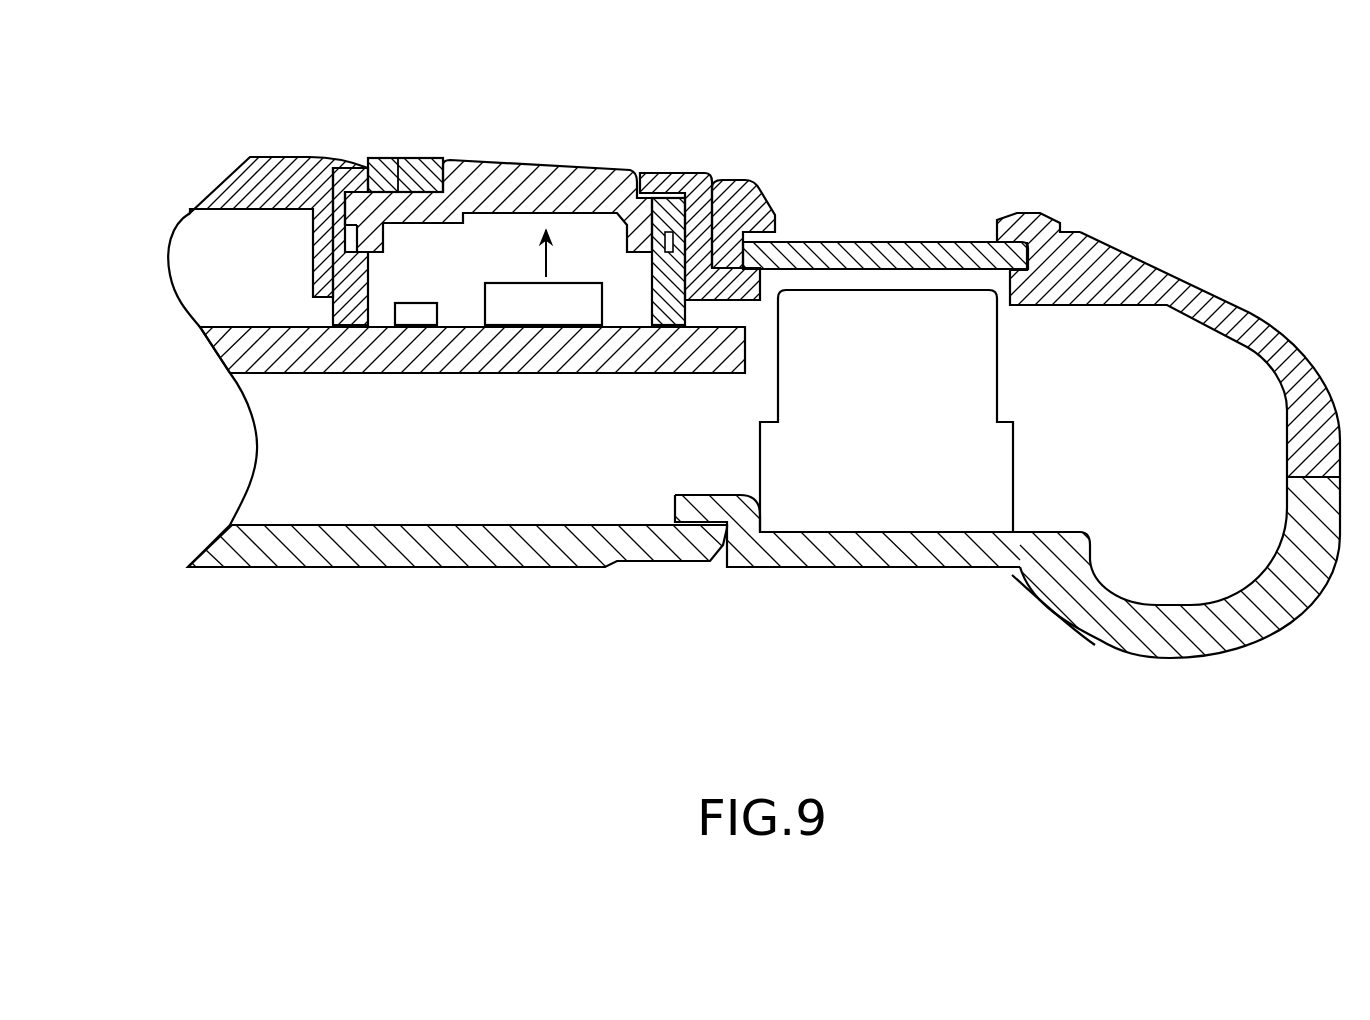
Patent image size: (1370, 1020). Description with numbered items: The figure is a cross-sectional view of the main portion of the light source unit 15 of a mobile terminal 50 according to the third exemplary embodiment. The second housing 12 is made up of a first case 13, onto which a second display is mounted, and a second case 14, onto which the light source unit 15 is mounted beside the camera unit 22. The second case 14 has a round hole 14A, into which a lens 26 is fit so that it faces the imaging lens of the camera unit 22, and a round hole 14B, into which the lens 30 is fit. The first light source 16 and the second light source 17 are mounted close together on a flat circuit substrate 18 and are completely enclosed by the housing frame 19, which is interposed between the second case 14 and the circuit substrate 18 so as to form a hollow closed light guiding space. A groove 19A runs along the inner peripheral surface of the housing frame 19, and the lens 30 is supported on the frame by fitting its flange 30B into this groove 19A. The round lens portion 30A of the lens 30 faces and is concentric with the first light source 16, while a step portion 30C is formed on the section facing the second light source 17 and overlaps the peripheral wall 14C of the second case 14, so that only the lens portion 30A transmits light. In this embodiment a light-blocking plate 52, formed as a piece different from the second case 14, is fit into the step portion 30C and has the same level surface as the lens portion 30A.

The second housing 12 is at (970, 648).
The first case 13 is at (1262, 647).
The second case 14 is at (1228, 292).
The round hole 14A is at (1000, 218).
The round hole 14B is at (630, 168).
The peripheral wall 14C is at (236, 172).
The light source unit 15 is at (442, 280).
The first light source 16 is at (556, 306).
The second light source 17 is at (432, 318).
The circuit substrate 18 is at (373, 373).
The housing frame 19 is at (329, 316).
The groove 19A is at (345, 164).
The camera unit 22 is at (1012, 363).
The lens 26 is at (884, 241).
The lens 30 is at (537, 187).
The lens portion 30A is at (500, 160).
The flange 30B is at (683, 173).
The step portion 30C is at (433, 163).
The mobile terminal 50 is at (1142, 730).
The light-blocking plate 52 is at (413, 156).